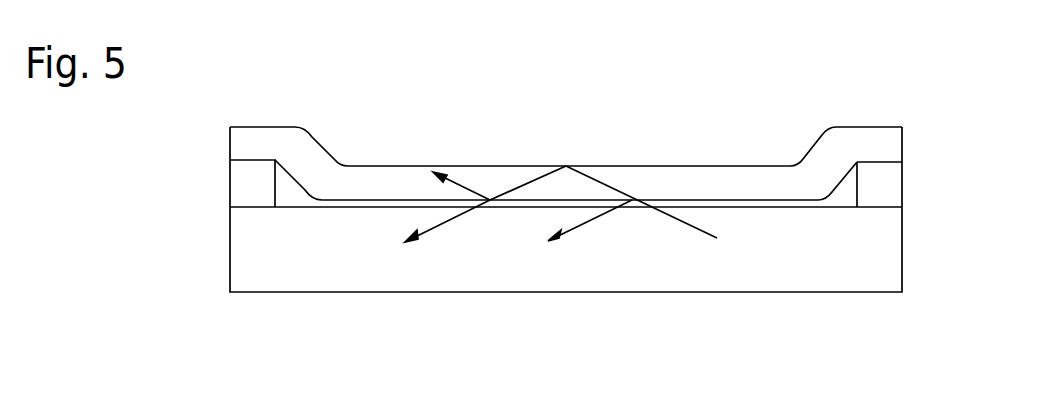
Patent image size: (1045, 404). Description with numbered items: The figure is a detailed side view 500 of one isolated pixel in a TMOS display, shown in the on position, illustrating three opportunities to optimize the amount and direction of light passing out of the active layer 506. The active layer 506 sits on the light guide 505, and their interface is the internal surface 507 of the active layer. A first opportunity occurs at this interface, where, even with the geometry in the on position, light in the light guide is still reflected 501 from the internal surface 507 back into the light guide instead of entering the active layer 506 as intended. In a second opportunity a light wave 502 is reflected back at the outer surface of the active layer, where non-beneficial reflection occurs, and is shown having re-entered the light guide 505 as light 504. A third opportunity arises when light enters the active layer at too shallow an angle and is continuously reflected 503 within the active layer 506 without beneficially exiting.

The detailed view of pixel 500 is at (504, 209).
The reflected light 501 is at (632, 200).
The light wave 502 is at (521, 184).
The continuously reflected light 503 is at (478, 196).
The re-entered light wave 504 is at (443, 225).
The light guide 505 is at (566, 239).
The active layer 506 is at (566, 183).
The internal surface 507 is at (393, 200).